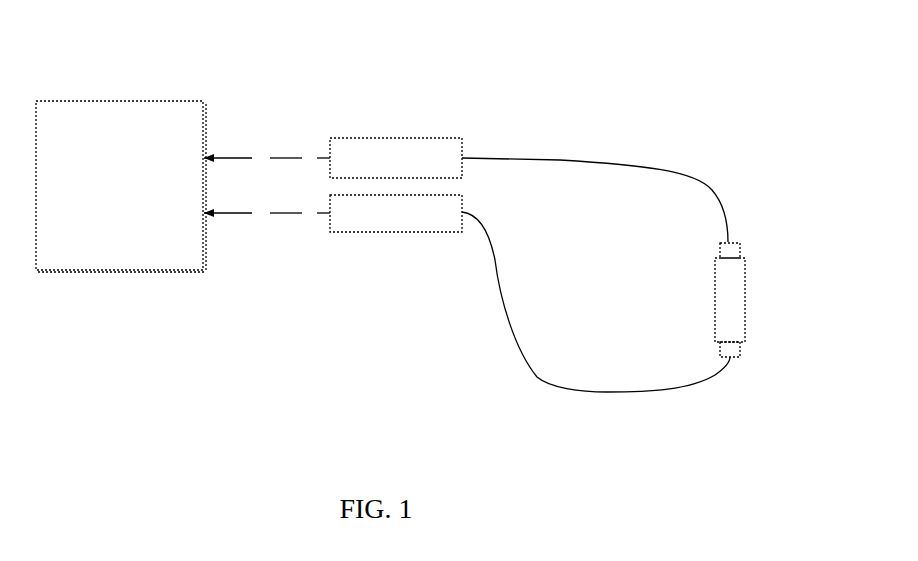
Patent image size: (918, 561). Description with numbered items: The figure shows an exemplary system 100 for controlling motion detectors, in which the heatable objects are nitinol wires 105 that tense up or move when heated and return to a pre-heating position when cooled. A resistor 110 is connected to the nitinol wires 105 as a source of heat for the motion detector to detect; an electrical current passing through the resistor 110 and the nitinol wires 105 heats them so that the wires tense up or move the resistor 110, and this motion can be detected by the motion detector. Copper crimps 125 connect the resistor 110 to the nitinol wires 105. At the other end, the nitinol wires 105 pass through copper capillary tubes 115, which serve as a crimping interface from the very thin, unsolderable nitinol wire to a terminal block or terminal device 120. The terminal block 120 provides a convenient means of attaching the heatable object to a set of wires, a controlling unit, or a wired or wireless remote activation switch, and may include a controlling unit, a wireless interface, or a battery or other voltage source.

The sensor system 100 is at (123, 393).
The nitinol wires 105 is at (716, 171).
The resistor 110 is at (751, 300).
The copper capillary tubes 115 is at (476, 187).
The terminal block 120 is at (204, 100).
The copper crimps 125 is at (746, 243).